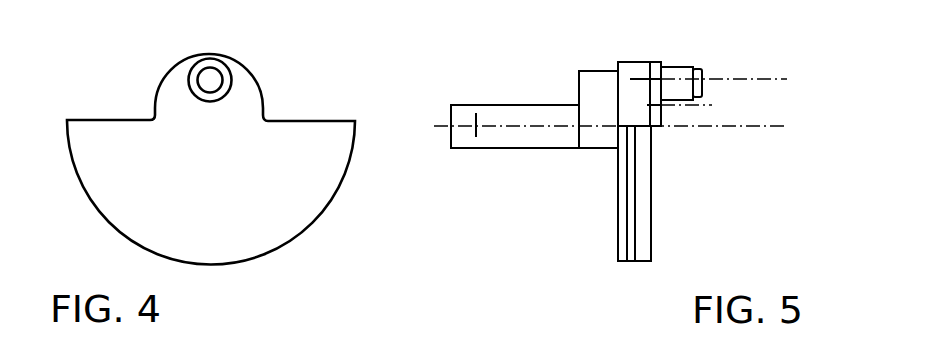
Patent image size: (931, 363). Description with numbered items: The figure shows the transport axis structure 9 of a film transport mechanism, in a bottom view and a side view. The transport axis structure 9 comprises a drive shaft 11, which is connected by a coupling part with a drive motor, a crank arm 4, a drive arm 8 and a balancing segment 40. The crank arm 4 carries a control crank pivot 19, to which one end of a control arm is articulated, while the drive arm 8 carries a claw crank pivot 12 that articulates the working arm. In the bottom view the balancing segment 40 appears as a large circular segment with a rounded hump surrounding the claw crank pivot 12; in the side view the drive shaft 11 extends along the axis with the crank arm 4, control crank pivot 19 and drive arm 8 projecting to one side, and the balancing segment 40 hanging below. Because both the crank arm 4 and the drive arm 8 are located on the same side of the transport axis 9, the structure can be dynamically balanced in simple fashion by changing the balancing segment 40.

In FIG. 5, the crank arm 4 is at (712, 105).
In FIG. 5, the drive arm 8 is at (787, 79).
In FIG. 5, the transport axis structure 9 is at (628, 133).
In FIG. 5, the drive shaft 11 is at (500, 142).
In FIG. 4, the claw crank pivot 12 is at (219, 63).
In FIG. 5, the claw crank pivot 12 is at (702, 70).
In FIG. 5, the control crank pivot 19 is at (580, 87).
In FIG. 4, the balancing segment 40 is at (273, 233).
In FIG. 5, the balancing segment 40 is at (643, 204).